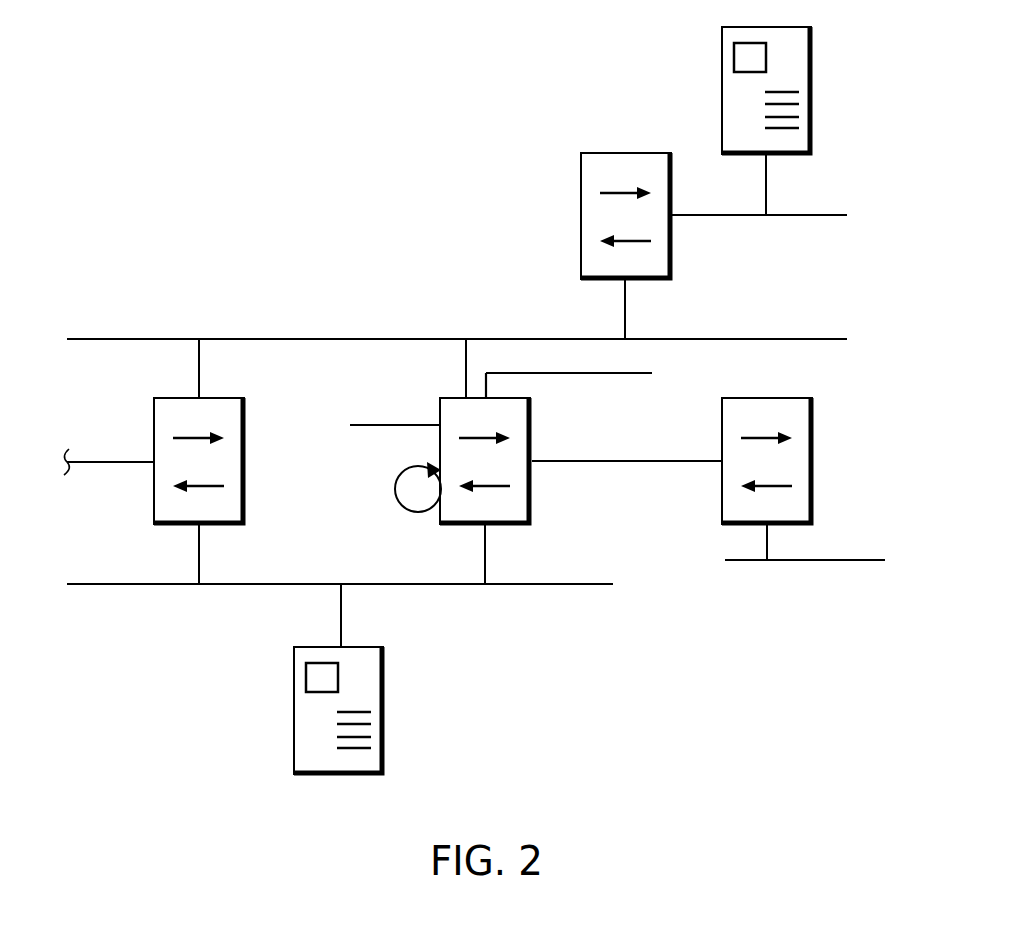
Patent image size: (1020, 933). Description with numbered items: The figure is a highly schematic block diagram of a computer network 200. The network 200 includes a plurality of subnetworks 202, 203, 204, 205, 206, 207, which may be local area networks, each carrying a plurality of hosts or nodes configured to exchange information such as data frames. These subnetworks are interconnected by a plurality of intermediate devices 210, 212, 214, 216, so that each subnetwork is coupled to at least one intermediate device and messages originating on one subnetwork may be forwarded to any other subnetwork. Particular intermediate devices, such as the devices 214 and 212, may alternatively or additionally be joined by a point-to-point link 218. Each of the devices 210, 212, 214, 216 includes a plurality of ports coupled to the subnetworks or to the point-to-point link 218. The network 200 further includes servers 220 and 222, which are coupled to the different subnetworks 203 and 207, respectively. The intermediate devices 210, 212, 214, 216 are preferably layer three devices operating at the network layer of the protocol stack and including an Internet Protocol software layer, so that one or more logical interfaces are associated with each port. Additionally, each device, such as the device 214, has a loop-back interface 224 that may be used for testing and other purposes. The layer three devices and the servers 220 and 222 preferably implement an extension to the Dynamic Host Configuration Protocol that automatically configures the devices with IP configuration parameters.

The computer network 200 is at (383, 155).
The subnetwork 202 is at (118, 339).
The subnetwork 203 is at (822, 215).
The subnetwork 204 is at (628, 373).
The subnetwork 205 is at (822, 560).
The subnetwork 206 is at (376, 425).
The subnetwork 207 is at (570, 584).
The intermediate device 210 is at (672, 258).
The intermediate device 212 is at (814, 497).
The intermediate device 214 is at (533, 497).
The intermediate device 216 is at (246, 497).
The point-to-point link 218 is at (672, 461).
The server 220 is at (813, 127).
The server 222 is at (388, 745).
The loop-back interface 224 is at (415, 512).